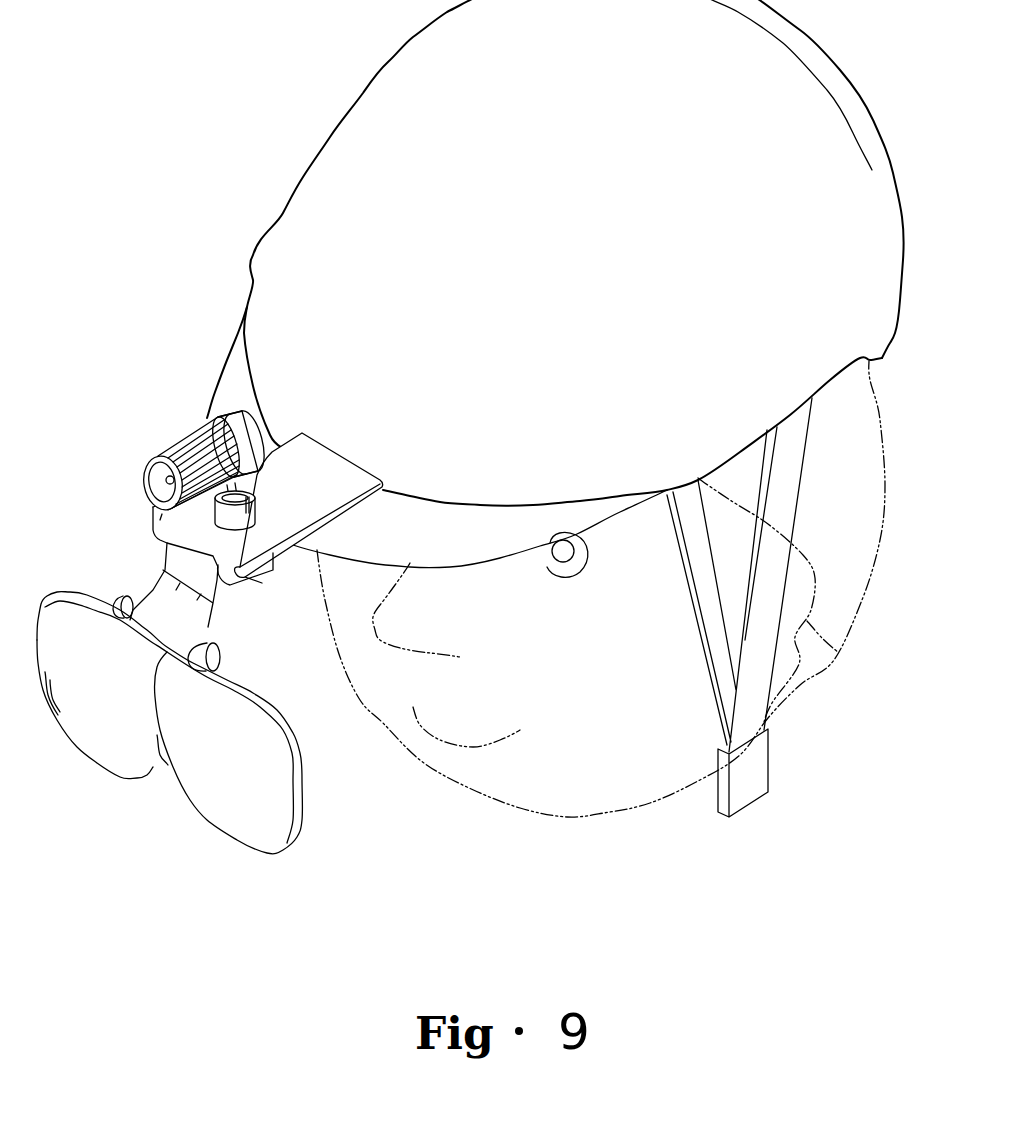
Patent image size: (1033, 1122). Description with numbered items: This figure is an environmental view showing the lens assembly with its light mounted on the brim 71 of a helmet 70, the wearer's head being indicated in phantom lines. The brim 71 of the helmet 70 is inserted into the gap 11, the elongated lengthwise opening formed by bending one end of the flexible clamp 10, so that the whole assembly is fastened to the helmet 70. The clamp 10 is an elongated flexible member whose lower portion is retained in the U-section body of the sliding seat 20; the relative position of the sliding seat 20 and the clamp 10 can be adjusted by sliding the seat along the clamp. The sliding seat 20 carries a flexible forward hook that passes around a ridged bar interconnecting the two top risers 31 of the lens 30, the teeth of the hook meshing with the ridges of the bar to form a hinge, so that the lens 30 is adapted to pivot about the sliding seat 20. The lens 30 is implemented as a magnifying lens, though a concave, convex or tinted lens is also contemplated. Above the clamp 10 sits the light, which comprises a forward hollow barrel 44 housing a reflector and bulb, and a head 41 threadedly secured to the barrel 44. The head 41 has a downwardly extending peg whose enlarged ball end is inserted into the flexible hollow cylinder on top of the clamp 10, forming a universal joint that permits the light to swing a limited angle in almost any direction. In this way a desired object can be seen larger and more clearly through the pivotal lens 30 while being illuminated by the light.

The helmet 70 is at (872, 335).
The brim 71 is at (463, 553).
The gap 11 is at (353, 510).
The clamp 10 is at (178, 567).
The sliding seat 20 is at (260, 585).
The head 41 is at (213, 420).
The barrel 44 is at (177, 453).
The riser 31 is at (220, 660).
The lens 30 is at (210, 777).